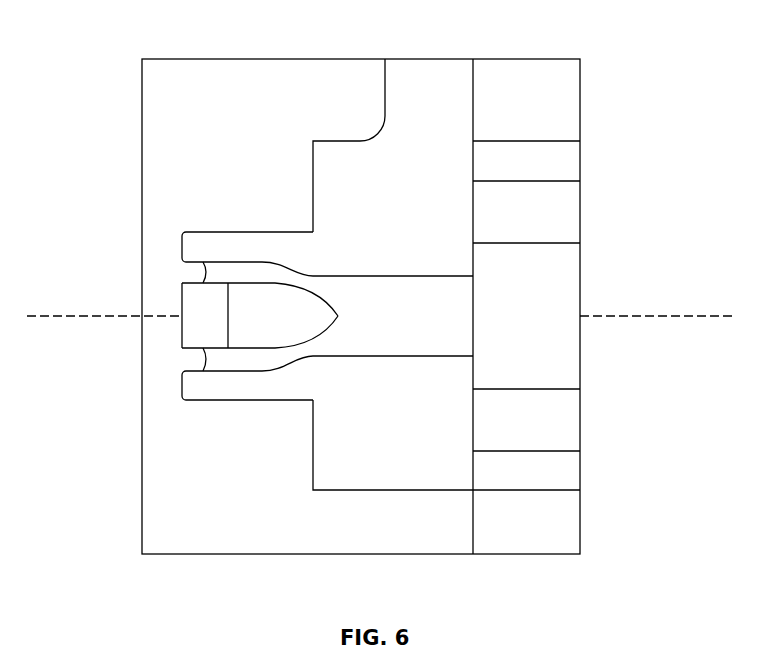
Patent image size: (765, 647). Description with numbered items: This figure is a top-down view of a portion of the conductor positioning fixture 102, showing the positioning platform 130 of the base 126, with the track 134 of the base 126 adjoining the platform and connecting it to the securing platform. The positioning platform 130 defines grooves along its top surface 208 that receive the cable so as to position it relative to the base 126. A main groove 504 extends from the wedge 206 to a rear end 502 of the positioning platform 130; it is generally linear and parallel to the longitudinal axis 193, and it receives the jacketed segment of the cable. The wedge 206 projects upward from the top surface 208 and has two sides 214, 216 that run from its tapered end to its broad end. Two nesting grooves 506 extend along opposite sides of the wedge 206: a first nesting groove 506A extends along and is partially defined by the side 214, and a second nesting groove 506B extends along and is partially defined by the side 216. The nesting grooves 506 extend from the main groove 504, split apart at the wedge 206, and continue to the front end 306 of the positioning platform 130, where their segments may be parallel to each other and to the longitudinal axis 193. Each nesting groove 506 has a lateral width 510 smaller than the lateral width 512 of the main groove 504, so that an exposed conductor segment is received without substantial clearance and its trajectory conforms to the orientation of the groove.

The conductor positioning fixture 102 is at (136, 41).
The longitudinal axis 193 is at (42, 315).
The wedge 206 is at (245, 283).
The side of wedge 214 is at (285, 349).
The side of wedge 216 is at (262, 340).
The nesting grooves 506 is at (288, 262).
The second nesting groove 506B is at (310, 268).
The first nesting groove 506A is at (219, 374).
The front end of positioning platform 306 is at (181, 386).
The lateral width of nesting groove 510 is at (262, 382).
The top surface of positioning platform 208 is at (377, 450).
The main groove 504 is at (401, 355).
The lateral width of main groove 512 is at (440, 286).
The base 126 is at (473, 107).
The track 134 is at (549, 490).
The rear end of positioning platform 502 is at (473, 472).
The positioning platform 130 is at (418, 492).